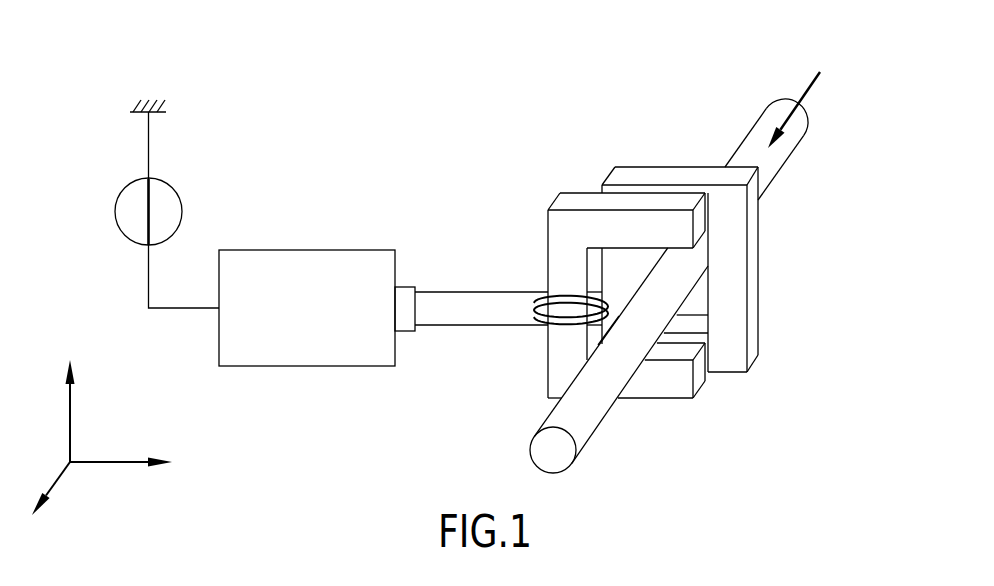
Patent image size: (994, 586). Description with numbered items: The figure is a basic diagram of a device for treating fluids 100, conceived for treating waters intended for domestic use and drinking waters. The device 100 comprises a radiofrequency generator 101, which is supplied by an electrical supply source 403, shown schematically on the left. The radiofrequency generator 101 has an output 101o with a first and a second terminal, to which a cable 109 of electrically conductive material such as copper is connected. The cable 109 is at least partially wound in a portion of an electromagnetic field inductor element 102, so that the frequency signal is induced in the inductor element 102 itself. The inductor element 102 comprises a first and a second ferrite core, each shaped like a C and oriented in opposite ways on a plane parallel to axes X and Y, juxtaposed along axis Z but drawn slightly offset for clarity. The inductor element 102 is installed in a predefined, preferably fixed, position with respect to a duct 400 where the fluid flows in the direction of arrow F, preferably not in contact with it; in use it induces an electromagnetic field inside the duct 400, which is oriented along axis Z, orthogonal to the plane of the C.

The device for treating fluids 100 is at (444, 77).
The electrical supply source 403 is at (186, 164).
The radiofrequency generator 101 is at (323, 323).
The output 101o is at (412, 357).
The cable 109 is at (465, 273).
The electromagnetic field inductor element 102 is at (590, 233).
The duct 400 is at (777, 148).